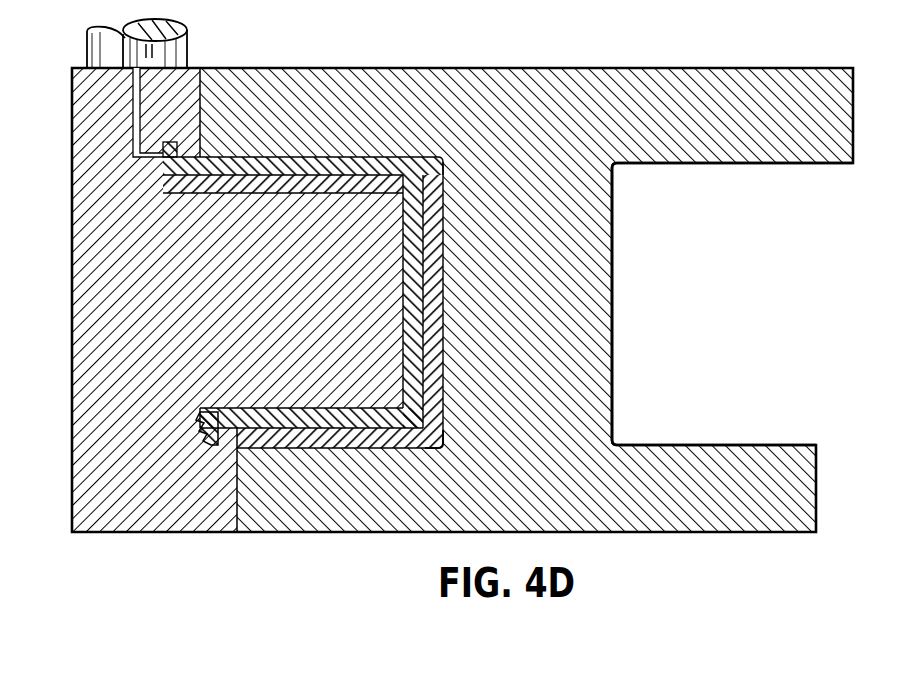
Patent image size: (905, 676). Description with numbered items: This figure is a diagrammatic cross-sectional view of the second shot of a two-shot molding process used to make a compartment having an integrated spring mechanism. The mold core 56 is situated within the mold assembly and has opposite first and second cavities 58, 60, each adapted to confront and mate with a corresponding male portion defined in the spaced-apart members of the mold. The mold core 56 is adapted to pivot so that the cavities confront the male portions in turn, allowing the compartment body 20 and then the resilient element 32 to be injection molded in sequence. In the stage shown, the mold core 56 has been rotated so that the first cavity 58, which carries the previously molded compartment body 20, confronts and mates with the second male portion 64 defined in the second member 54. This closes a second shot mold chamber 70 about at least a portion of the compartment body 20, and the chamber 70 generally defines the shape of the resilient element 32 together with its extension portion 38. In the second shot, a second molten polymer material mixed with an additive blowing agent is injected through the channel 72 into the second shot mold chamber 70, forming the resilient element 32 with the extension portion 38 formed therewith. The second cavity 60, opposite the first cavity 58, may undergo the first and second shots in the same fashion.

The second member 54 is at (72, 103).
The mold core 56 is at (497, 68).
The channel 72 is at (130, 138).
The second shot mold chamber 70 is at (300, 193).
The second male portion 64 is at (410, 297).
The first cavity 58 is at (433, 283).
The second cavity 60 is at (613, 278).
The extension portion 38 is at (220, 410).
The resilient element 32 is at (325, 408).
The compartment body 20 is at (438, 441).